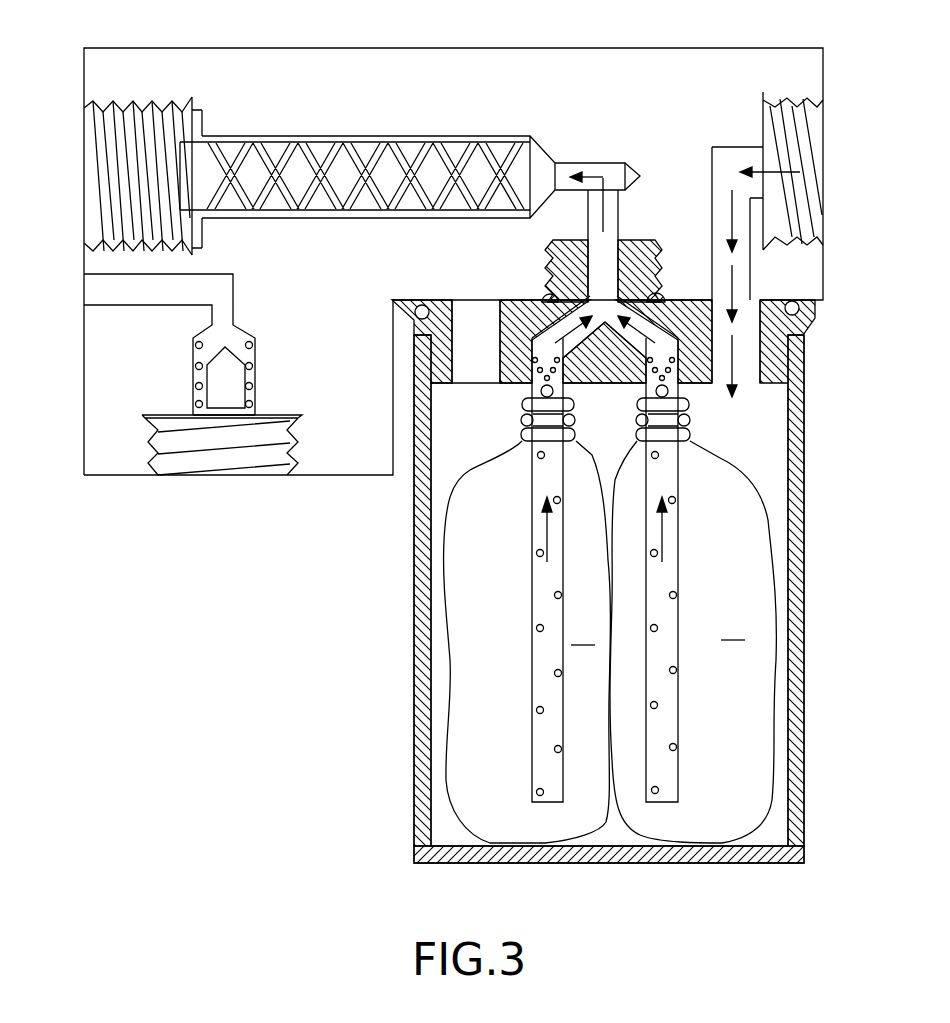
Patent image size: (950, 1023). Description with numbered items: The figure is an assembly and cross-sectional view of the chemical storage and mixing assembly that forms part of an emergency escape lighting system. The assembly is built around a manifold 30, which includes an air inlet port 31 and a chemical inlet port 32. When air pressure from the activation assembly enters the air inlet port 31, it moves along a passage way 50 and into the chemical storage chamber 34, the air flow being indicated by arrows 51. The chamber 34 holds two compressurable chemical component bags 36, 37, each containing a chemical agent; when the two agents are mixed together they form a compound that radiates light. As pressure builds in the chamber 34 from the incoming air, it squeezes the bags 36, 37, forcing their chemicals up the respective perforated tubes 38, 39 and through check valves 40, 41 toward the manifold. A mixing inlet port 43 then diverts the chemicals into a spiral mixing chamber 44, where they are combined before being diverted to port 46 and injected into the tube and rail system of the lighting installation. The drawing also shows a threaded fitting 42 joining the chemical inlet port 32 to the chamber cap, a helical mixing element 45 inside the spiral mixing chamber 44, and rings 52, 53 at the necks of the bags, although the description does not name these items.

The manifold 30 is at (293, 72).
The air inlet port 31 is at (818, 162).
The chemical inlet port 32 is at (628, 232).
The chemical storage chamber 34 is at (787, 482).
The chemical component bag 36 is at (660, 820).
The chemical component bag 37 is at (510, 823).
The perforated tube 38 is at (530, 670).
The perforated tube 39 is at (678, 668).
The check valve 40 is at (574, 397).
The check valve 41 is at (690, 418).
The threaded fitting 42 is at (600, 280).
The mixing inlet port 43 is at (627, 177).
The spiral mixing chamber 44 is at (442, 137).
The static mixing element 45 is at (318, 167).
The port 46 is at (107, 107).
The passage way 50 is at (747, 147).
The arrows 51 is at (750, 158).
The sealing ring 52 is at (524, 405).
The retaining ring 53 is at (522, 426).